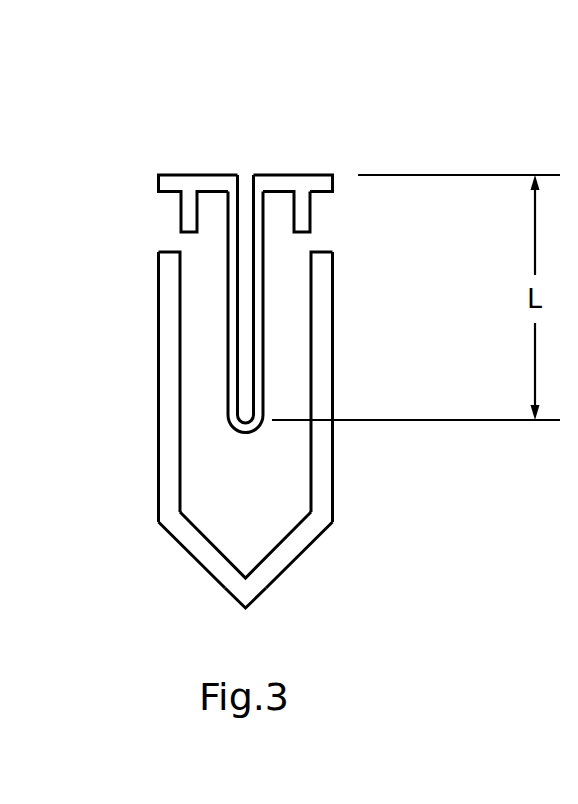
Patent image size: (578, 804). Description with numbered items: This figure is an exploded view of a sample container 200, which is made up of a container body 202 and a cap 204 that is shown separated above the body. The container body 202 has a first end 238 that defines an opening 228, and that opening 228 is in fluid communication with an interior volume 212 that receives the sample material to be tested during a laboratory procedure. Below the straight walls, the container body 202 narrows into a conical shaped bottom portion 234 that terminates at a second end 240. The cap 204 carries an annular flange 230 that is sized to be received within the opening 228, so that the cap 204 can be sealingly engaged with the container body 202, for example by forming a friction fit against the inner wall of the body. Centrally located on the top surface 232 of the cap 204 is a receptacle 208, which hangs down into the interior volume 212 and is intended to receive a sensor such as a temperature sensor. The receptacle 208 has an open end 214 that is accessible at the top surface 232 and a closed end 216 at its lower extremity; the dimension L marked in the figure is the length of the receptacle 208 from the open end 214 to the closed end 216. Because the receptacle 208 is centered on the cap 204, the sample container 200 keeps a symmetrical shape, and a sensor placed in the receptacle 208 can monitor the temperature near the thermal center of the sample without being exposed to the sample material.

The sample container 200 is at (398, 138).
The container body 202 is at (336, 477).
The cap 204 is at (171, 170).
The receptacle 208 is at (243, 183).
The interior volume 212 is at (210, 485).
The open end 214 is at (252, 182).
The closed end 216 is at (243, 424).
The opening 228 is at (202, 261).
The annular flange 230 is at (307, 217).
The top surface 232 is at (290, 174).
The conical shaped bottom portion 234 is at (207, 570).
The first end 238 is at (327, 258).
The second end 240 is at (248, 610).